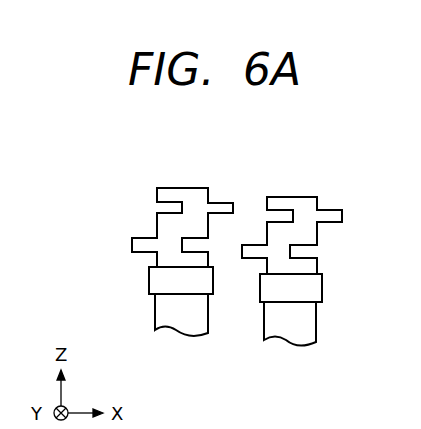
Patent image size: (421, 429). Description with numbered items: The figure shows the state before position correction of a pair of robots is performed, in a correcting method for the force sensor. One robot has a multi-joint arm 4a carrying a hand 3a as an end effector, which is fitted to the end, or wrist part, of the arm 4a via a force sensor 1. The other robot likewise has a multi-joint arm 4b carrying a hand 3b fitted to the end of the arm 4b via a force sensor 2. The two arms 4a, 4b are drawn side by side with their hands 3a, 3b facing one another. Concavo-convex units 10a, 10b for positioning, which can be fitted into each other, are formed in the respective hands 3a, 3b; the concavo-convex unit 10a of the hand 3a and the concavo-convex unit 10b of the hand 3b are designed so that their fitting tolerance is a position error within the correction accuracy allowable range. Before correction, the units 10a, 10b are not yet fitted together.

The force sensor 1 is at (149, 280).
The force sensor 2 is at (322, 287).
The hand 3a is at (184, 188).
The hand 3b is at (295, 197).
The multi-joint arm 4a is at (155, 316).
The multi-joint arm 4b is at (316, 318).
The concavo-convex unit 10a is at (157, 233).
The concavo-convex unit 10b is at (317, 247).